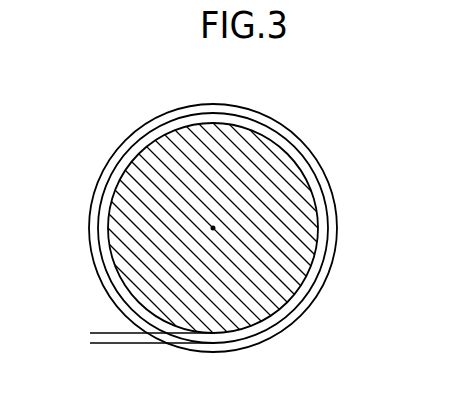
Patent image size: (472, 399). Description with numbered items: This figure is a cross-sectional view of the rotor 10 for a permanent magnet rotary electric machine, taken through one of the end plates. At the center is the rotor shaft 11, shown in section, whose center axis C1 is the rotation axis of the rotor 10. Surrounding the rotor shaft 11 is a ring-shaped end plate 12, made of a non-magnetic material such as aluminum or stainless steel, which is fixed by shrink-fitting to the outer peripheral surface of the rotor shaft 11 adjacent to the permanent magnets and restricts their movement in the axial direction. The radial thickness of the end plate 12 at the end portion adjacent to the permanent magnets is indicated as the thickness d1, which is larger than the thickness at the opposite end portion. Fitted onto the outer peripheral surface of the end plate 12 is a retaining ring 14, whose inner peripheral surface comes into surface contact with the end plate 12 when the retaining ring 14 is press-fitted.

The rotor 10 is at (357, 121).
The rotor shaft 11 is at (324, 278).
The end plate 12 is at (339, 231).
The retaining ring 14 is at (344, 195).
The center axis C1 is at (211, 228).
The thickness d1 is at (102, 357).